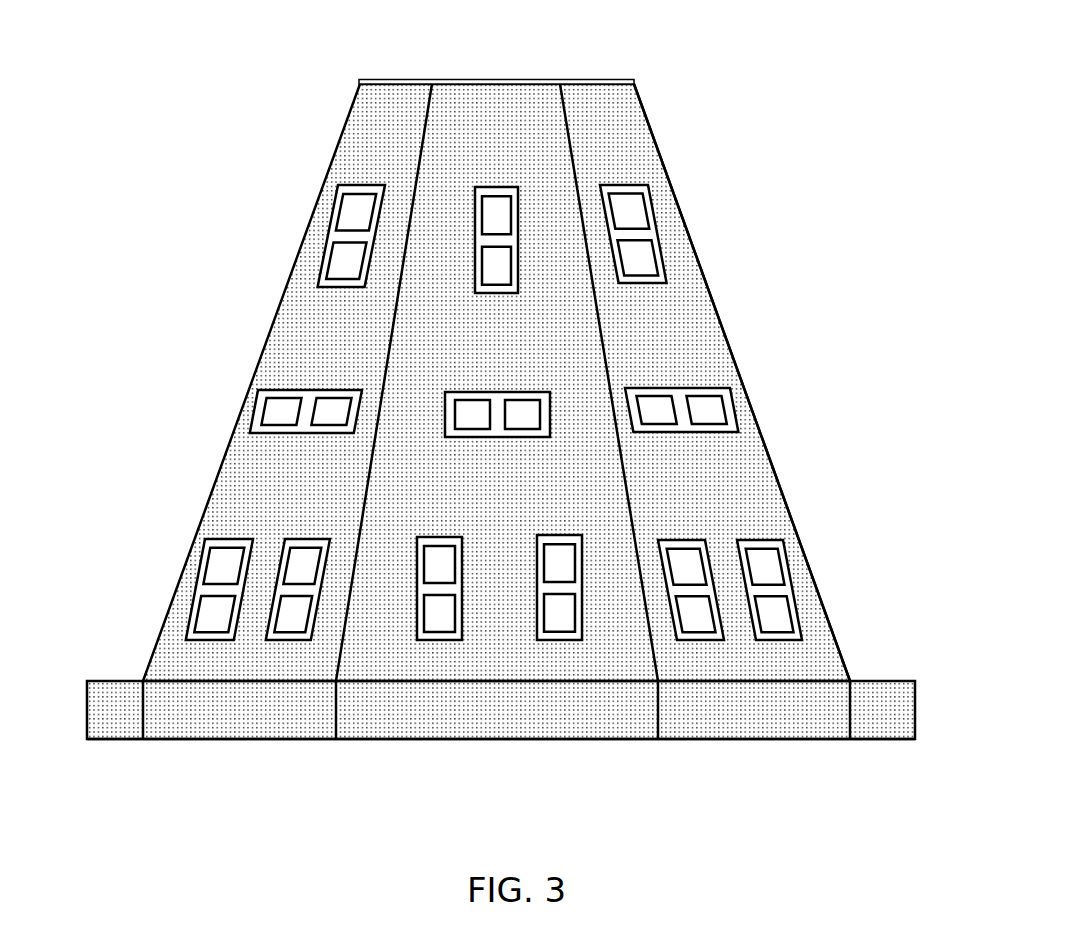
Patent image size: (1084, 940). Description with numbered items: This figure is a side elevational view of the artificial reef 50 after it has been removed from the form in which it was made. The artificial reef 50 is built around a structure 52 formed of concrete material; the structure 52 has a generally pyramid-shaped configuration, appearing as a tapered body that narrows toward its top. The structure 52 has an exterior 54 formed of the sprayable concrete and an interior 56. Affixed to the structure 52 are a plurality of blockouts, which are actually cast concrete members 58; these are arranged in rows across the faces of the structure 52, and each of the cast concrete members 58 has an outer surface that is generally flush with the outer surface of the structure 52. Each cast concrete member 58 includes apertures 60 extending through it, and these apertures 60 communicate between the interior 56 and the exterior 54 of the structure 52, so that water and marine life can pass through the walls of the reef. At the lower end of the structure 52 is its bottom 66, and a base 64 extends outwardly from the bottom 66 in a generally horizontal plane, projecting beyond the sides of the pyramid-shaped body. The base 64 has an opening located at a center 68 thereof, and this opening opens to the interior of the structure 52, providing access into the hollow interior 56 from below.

The artificial reef 50 is at (636, 128).
The structure 52 is at (712, 327).
The exterior 54 is at (762, 472).
The interior 56 is at (594, 79).
The cast concrete members 58 is at (648, 233).
The apertures 60 is at (713, 408).
The base 64 is at (876, 727).
The bottom 66 is at (850, 678).
The center 68 is at (500, 742).